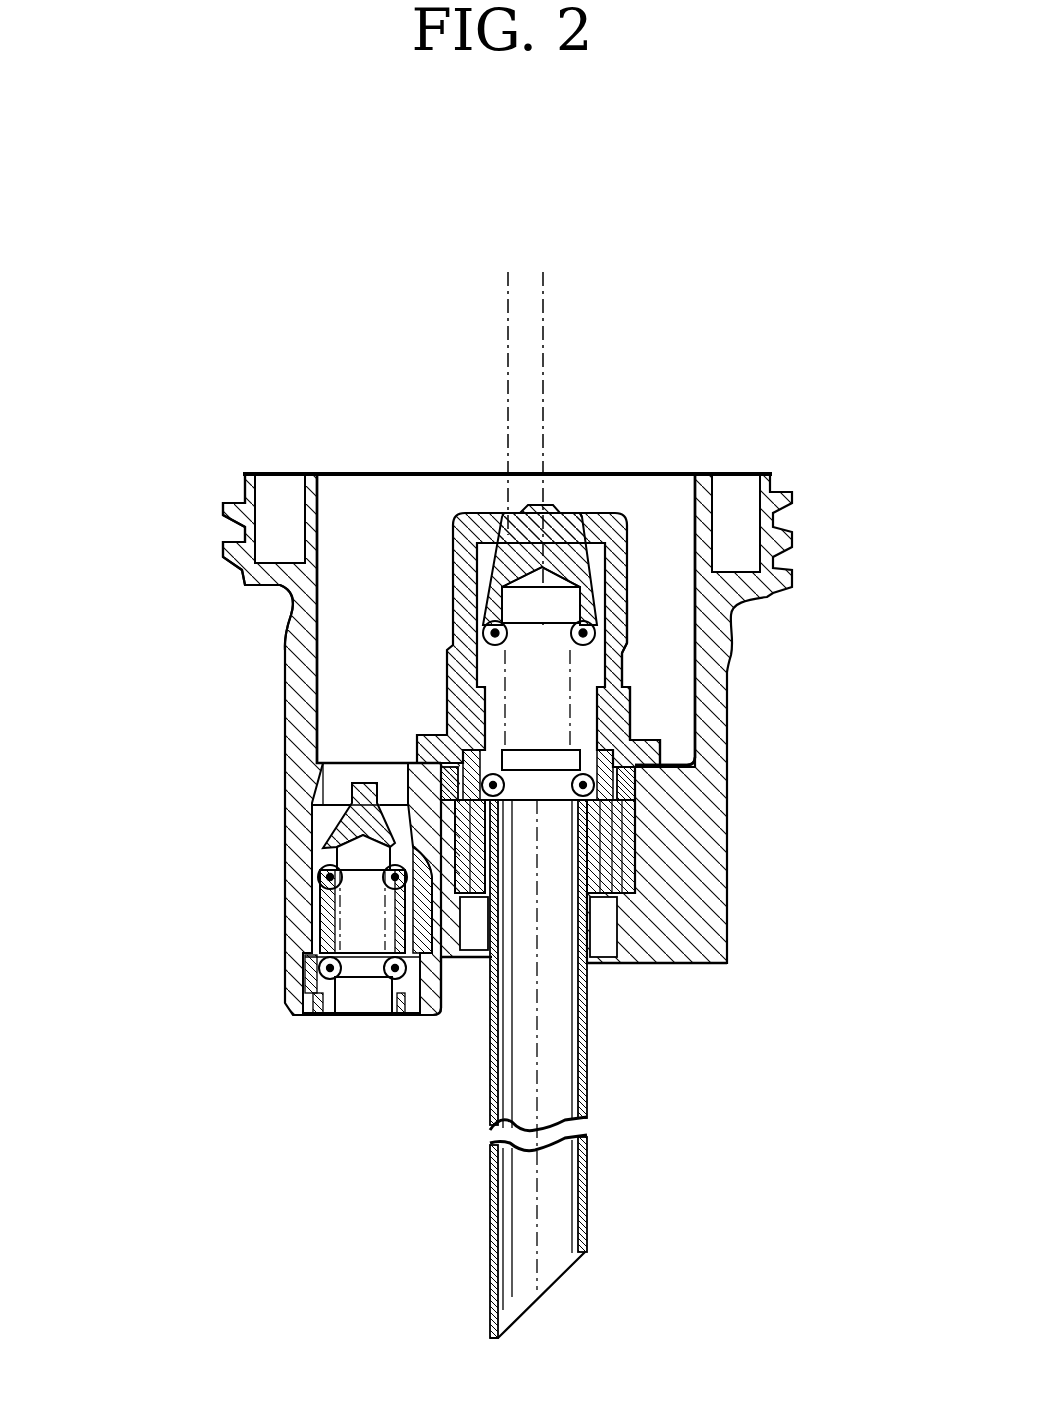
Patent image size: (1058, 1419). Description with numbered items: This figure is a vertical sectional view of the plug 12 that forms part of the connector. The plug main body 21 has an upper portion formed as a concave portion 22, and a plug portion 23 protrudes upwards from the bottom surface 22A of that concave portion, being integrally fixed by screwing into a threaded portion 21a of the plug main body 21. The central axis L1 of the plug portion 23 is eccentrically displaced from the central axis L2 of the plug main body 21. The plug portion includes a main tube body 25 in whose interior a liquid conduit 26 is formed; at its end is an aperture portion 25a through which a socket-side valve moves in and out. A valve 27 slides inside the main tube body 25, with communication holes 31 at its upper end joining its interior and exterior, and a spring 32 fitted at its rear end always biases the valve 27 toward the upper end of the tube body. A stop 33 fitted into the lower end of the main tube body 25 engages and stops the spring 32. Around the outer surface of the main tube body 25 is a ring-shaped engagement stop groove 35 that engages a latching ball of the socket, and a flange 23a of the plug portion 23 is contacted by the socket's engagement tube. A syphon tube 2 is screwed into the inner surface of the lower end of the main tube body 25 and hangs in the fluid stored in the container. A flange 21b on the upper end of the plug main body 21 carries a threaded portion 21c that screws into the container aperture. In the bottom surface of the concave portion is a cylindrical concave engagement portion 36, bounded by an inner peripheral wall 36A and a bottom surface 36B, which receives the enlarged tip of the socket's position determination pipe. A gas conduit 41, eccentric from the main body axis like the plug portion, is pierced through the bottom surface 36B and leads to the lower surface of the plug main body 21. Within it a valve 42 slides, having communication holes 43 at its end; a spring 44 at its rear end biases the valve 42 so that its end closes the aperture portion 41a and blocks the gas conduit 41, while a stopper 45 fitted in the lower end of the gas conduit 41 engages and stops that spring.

The syphon tube 2 is at (588, 1040).
The plug 12 is at (914, 507).
The plug main body 21 is at (717, 827).
The threaded portion 21a is at (727, 918).
The flange 21b is at (283, 586).
The threaded portion 21c is at (228, 507).
The concave portion 22 is at (363, 522).
The bottom surface 22A is at (668, 760).
The plug portion 23 is at (640, 542).
The flange 23a is at (647, 727).
The main tube body 25 is at (617, 616).
The aperture portion 25a is at (579, 516).
The liquid conduit 26 is at (615, 670).
The valve 27 is at (503, 516).
The communication holes 31 is at (478, 546).
The spring 32 is at (478, 611).
The stop 33 is at (640, 858).
The engagement stop groove 35 is at (620, 641).
The concave engagement portion 36 is at (368, 766).
The inner peripheral wall 36A is at (383, 762).
The bottom surface 36B is at (342, 763).
The gas conduit 41 is at (357, 920).
The aperture portion 41a is at (340, 798).
The valve 42 is at (345, 868).
The communication holes 43 is at (446, 1008).
The spring 44 is at (303, 1000).
The stopper 45 is at (315, 1016).
The central axis of the plug portion L1 is at (546, 362).
The central axis of the plug main body L2 is at (505, 345).